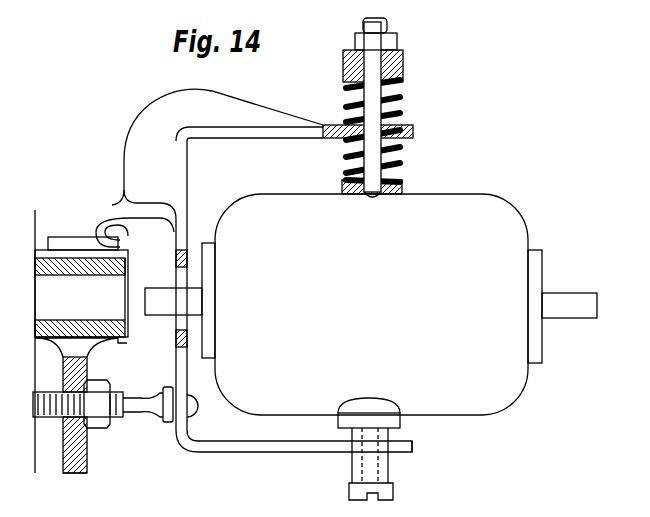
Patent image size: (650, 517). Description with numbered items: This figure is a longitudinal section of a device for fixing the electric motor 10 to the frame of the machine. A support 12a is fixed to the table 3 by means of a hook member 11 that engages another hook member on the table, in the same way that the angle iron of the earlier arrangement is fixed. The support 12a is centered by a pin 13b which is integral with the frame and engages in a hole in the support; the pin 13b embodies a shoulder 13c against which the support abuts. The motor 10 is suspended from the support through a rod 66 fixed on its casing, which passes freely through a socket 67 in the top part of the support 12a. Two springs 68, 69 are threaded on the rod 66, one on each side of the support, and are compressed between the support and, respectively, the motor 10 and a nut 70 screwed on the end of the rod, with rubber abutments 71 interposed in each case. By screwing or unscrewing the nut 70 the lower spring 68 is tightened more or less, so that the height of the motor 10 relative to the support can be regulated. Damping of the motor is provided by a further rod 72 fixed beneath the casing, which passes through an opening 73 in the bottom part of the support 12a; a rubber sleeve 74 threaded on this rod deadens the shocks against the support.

The table 3 is at (57, 253).
The electric motor 10 is at (371, 304).
The hook member 11 is at (120, 243).
The support 12a is at (187, 176).
The pin 13b is at (143, 405).
The shoulder 13c is at (165, 390).
The rod 66 is at (366, 110).
The socket 67 is at (352, 140).
The lower spring 68 is at (348, 172).
The upper spring 69 is at (348, 89).
The nut 70 is at (357, 38).
The rubber abutment 71 is at (345, 70).
The damping rod 72 is at (362, 477).
The opening 73 is at (392, 450).
The rubber sleeve 74 is at (382, 476).